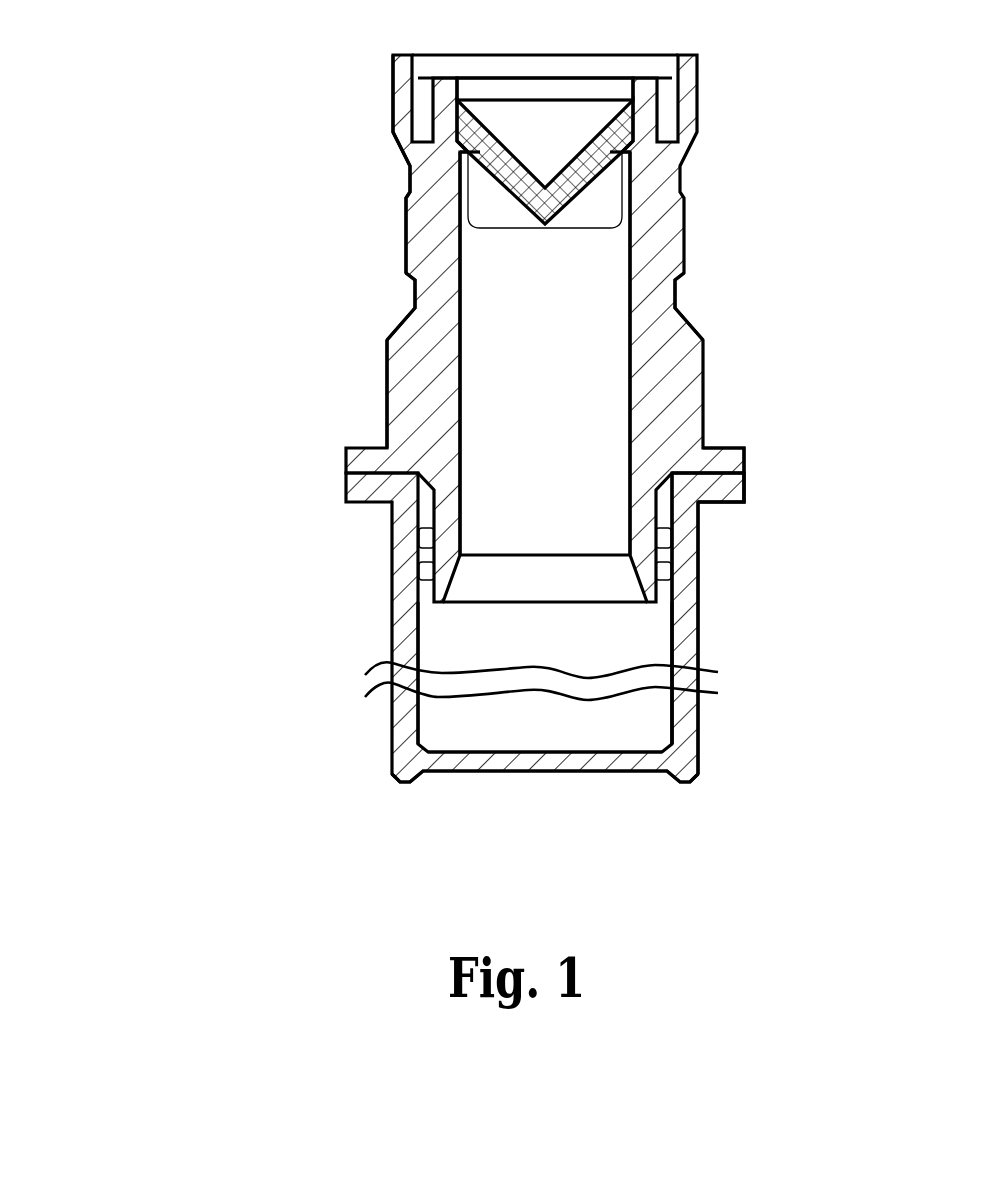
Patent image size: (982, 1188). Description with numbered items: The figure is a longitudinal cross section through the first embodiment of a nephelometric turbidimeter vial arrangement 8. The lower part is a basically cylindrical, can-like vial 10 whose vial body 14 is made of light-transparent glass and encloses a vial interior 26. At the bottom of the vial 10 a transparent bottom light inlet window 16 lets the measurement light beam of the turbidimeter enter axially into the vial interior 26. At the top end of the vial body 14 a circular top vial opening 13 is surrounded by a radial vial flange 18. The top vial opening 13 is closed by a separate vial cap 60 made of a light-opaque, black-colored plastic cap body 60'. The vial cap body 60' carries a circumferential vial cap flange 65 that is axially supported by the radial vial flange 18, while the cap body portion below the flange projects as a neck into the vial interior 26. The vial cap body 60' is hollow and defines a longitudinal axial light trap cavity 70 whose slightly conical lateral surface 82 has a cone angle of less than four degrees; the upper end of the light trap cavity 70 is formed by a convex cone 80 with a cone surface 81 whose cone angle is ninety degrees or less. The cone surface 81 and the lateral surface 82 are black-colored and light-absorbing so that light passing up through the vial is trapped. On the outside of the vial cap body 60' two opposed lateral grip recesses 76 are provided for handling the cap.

The vial arrangement 8 is at (148, 327).
The vial 10 is at (277, 476).
The top vial opening 13 is at (746, 483).
The vial body 14 is at (699, 622).
The bottom light inlet window 16 is at (565, 800).
The radial vial flange 18 is at (724, 493).
The vial interior 26 is at (452, 634).
The vial cap 60 is at (477, 328).
The vial cap body 60' is at (344, 251).
The vial cap flange 65 is at (730, 460).
The light trap cavity 70 is at (565, 518).
The lateral grip recesses 76 is at (392, 297).
The convex cone 80 is at (545, 226).
The cone surface 81 is at (582, 190).
The conical lateral surface 82 is at (625, 328).